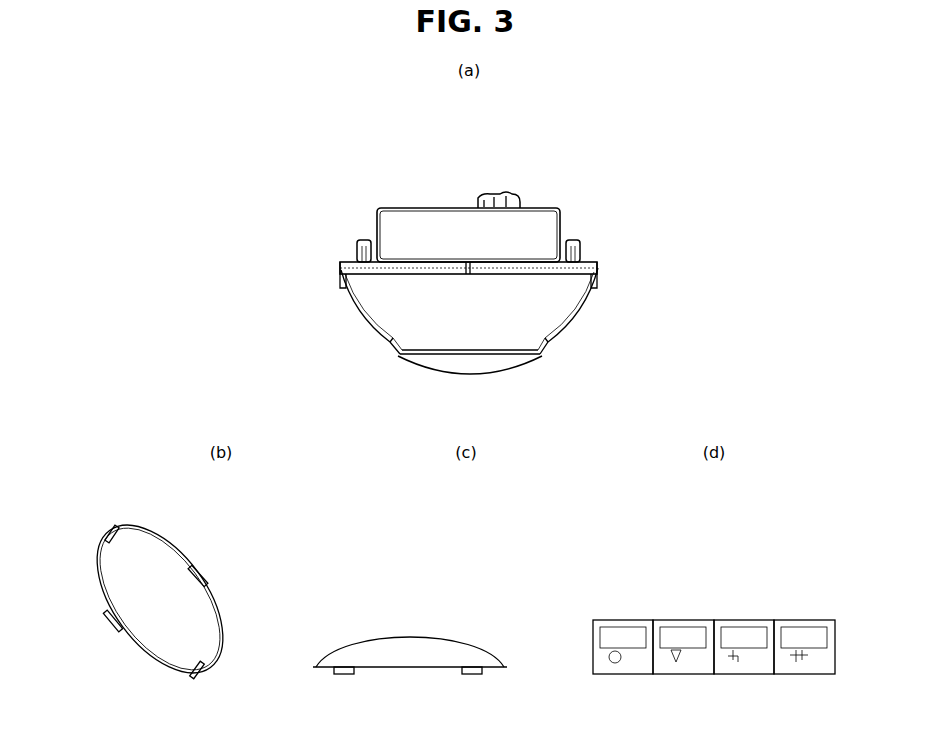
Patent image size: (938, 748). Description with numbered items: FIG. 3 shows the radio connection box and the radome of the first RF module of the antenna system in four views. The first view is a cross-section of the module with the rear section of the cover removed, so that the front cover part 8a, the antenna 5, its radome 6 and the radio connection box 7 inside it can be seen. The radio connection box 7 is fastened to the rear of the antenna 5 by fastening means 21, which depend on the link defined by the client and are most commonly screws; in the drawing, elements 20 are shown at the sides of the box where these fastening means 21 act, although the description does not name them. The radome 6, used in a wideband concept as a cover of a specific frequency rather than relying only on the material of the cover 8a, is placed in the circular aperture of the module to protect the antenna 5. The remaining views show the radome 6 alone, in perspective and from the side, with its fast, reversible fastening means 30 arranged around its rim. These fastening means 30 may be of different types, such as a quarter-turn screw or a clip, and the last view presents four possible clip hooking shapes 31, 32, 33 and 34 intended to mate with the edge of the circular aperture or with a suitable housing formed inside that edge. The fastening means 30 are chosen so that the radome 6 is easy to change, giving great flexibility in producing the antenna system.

The antenna 5 is at (513, 273).
The radome 6 is at (503, 370).
The radio connection box 7 is at (452, 245).
The cover 8a is at (352, 312).
The mounting post 20 is at (376, 238).
The fastening means 21 is at (360, 172).
The fastening means 30 is at (205, 587).
The hooking shape 31 is at (623, 628).
The hooking shape 32 is at (683, 628).
The hooking shape 33 is at (744, 628).
The hooking shape 34 is at (804, 628).